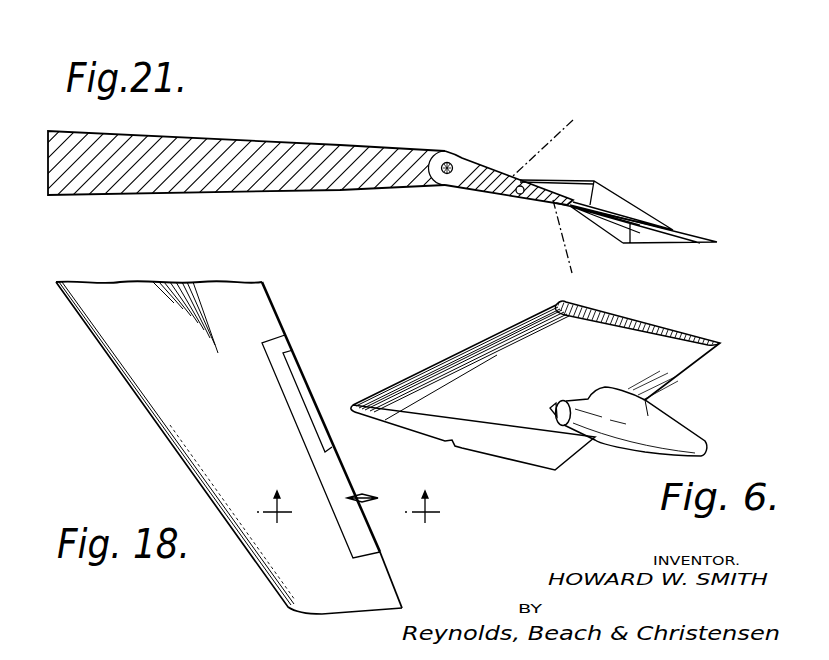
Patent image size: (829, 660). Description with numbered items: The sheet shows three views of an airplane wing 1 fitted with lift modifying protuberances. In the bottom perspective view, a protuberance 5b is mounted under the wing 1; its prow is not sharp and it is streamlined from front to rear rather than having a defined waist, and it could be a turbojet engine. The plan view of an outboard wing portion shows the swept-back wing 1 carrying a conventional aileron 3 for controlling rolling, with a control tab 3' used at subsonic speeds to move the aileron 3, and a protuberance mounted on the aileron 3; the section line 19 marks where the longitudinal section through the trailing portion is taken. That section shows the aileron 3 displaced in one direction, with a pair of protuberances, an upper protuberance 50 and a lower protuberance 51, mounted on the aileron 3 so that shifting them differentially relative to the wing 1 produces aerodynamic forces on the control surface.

In FIG. 21, the wing 1 is at (215, 140).
In FIG. 18, the wing 1 is at (255, 303).
In FIG. 6, the wing 1 is at (462, 363).
In FIG. 21, the aileron 3 is at (540, 196).
In FIG. 18, the aileron 3 is at (321, 446).
In FIG. 18, the control tab 3' is at (309, 401).
In FIG. 21, the upper protuberance 50 is at (628, 202).
In FIG. 18, the upper protuberance 50 is at (361, 497).
In FIG. 21, the lower protuberance 51 is at (665, 245).
In FIG. 18, the section line 19— 19 is at (351, 511).
In FIG. 6, the protuberance 5b is at (640, 433).